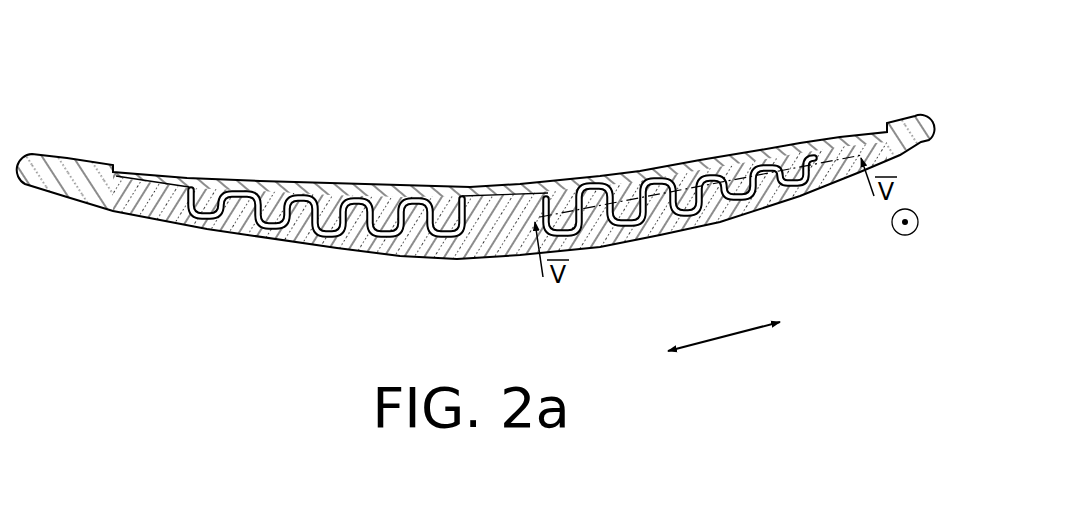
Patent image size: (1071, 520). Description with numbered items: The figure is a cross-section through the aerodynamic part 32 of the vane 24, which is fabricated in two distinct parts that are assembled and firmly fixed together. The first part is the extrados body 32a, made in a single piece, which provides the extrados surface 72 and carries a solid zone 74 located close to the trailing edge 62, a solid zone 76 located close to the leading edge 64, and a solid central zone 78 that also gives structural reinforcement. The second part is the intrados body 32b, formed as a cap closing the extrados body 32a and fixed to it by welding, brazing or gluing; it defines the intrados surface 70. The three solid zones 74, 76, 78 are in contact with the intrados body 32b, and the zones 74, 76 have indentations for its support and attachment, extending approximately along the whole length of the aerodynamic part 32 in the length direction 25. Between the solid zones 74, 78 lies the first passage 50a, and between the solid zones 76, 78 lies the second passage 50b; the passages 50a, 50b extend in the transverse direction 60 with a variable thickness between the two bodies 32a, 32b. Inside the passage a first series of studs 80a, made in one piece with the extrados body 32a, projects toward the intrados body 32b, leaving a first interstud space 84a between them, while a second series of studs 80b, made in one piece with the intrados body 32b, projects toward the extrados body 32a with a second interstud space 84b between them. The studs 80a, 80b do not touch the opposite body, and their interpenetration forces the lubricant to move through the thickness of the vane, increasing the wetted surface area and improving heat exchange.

The vane 24 is at (318, 264).
The length direction 25 is at (893, 232).
The aerodynamic part 32 is at (628, 110).
The extrados body 32a is at (107, 214).
The intrados body 32b is at (533, 179).
The first passage 50a is at (648, 257).
The second passage 50b is at (241, 263).
The transverse direction 60 is at (735, 340).
The trailing edge 62 is at (920, 117).
The leading edge 64 is at (30, 165).
The intrados surface 70 is at (476, 185).
The extrados surface 72 is at (472, 258).
The solid zone 74 is at (840, 172).
The solid zone 76 is at (143, 198).
The solid central zone 78 is at (508, 228).
The first series of studs 80a is at (302, 210).
The second series of studs 80b is at (281, 214).
The first interstud space 84a is at (368, 196).
The second interstud space 84b is at (401, 199).